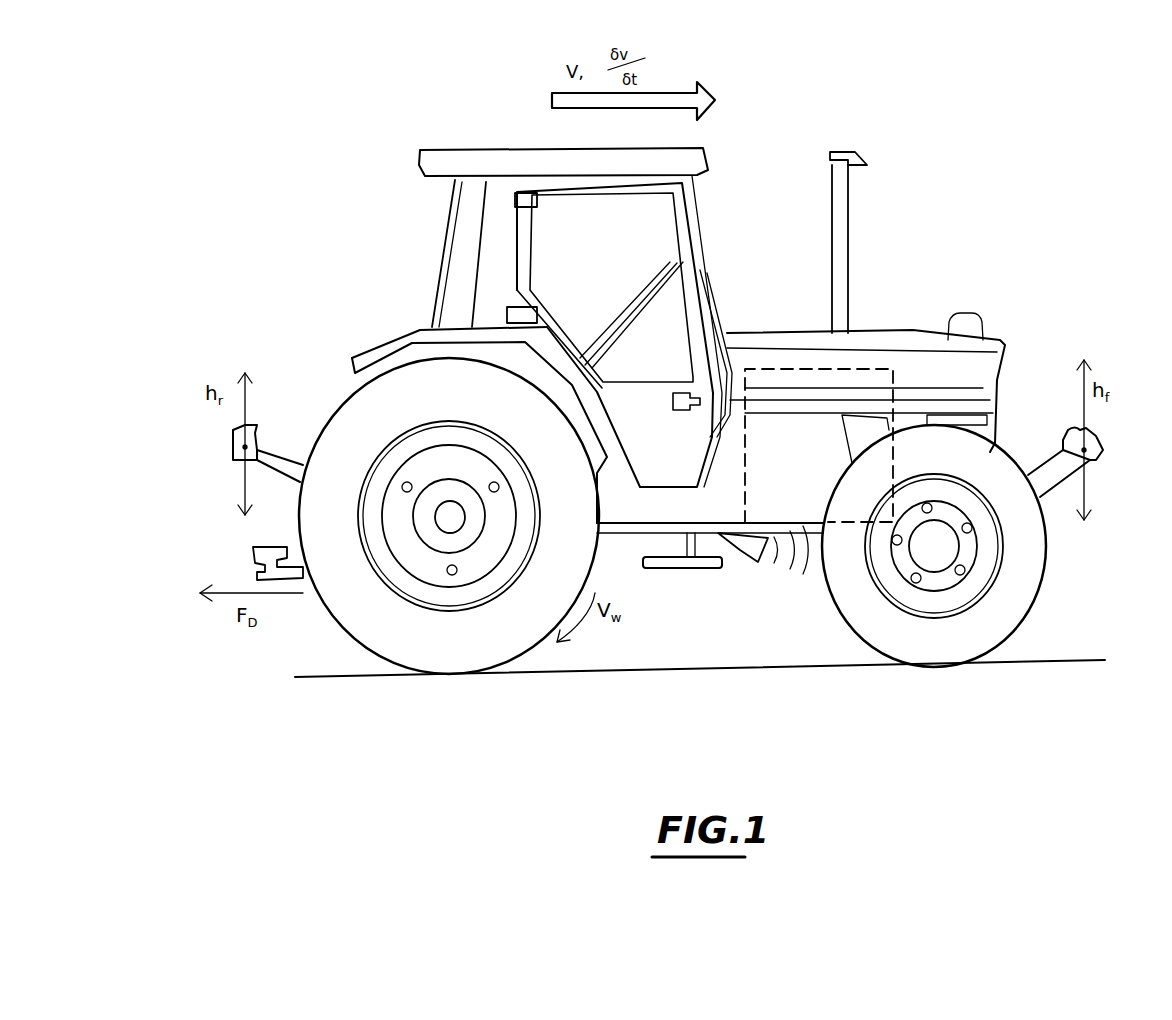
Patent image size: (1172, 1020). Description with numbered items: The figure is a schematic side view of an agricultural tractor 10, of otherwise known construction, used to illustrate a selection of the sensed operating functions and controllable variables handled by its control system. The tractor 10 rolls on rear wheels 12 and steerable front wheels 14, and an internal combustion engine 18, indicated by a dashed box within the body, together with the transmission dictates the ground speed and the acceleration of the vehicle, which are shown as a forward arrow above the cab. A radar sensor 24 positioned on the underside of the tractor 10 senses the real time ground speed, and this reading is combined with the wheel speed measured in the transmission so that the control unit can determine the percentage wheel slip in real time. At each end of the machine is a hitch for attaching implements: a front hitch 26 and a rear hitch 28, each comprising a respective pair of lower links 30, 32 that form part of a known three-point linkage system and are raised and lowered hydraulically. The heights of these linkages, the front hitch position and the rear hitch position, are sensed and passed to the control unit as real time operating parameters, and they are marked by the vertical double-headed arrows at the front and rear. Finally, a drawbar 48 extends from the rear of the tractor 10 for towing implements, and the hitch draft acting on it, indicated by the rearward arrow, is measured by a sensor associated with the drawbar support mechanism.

The agricultural tractor 10 is at (912, 236).
The rear wheels 12 is at (363, 647).
The steerable front wheels 14 is at (1037, 595).
The internal combustion engine 18 is at (797, 493).
The radar sensor 24 is at (747, 547).
The front hitch 26 is at (1120, 468).
The rear hitch 28 is at (215, 479).
The front lower links 30 is at (1100, 442).
The rear lower links 32 is at (233, 445).
The drawbar 48 is at (277, 553).